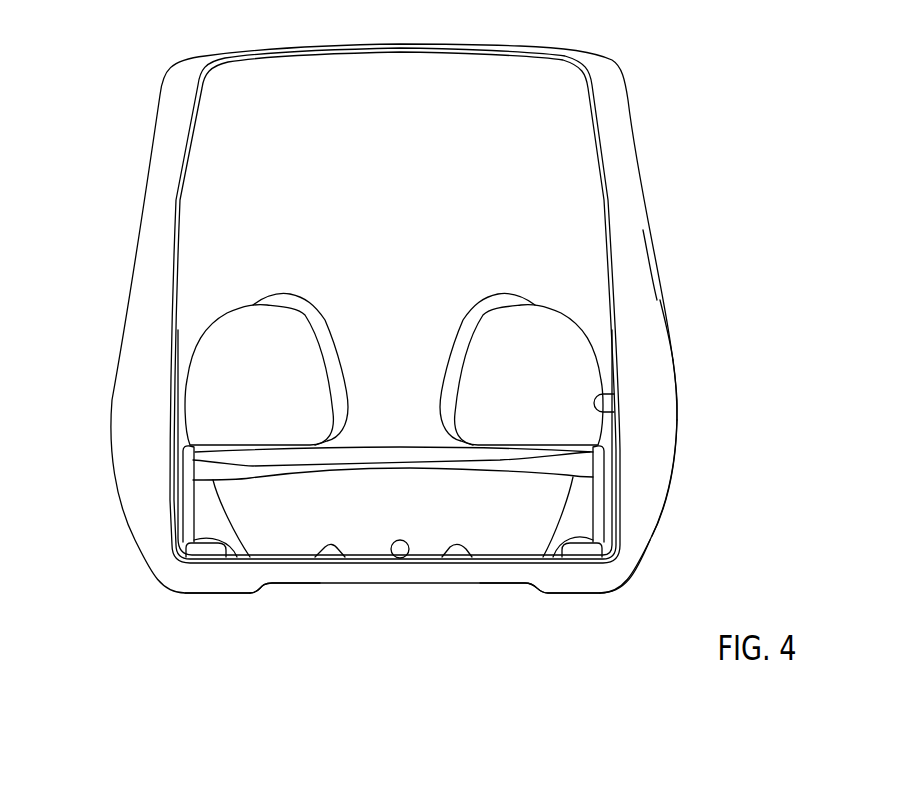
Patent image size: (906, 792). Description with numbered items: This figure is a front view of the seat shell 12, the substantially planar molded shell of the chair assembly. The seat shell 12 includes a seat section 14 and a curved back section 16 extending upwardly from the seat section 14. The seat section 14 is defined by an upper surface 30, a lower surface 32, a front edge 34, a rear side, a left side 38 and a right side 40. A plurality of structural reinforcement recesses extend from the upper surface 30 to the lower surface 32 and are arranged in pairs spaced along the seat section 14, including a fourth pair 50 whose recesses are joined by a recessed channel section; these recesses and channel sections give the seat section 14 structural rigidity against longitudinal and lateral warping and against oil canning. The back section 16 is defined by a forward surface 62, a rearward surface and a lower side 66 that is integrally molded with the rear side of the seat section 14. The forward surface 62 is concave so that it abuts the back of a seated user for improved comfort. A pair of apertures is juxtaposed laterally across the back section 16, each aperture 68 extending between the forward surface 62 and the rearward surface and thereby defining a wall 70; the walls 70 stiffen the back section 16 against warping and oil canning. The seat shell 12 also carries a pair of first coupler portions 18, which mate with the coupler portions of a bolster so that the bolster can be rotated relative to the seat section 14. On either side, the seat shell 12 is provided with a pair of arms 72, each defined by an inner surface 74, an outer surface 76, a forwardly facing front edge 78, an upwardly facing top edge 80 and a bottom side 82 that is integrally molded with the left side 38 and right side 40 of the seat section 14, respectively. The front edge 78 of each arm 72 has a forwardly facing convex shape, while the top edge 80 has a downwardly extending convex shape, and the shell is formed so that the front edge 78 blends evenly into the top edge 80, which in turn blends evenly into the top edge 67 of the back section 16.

The seat shell 12 is at (684, 147).
The seat section 14 is at (273, 594).
The back section 16 is at (514, 46).
The first coupler portions 18 is at (618, 472).
The upper surface 30 is at (410, 554).
The lower surface 32 is at (312, 585).
The front edge 34 is at (508, 573).
The left side 38 is at (185, 556).
The right side 40 is at (601, 533).
The fourth pair of recesses 50 is at (457, 554).
The forward surface 62 is at (314, 80).
The lower side 66 is at (263, 515).
The top edge 67 is at (420, 45).
The aperture 68 is at (567, 357).
The wall 70 is at (603, 432).
The arms 72 is at (678, 319).
The inner surface 74 is at (612, 418).
The outer surface 76 is at (678, 388).
The front edge 78 is at (650, 496).
The top edge 80 is at (648, 280).
The bottom side 82 is at (632, 566).